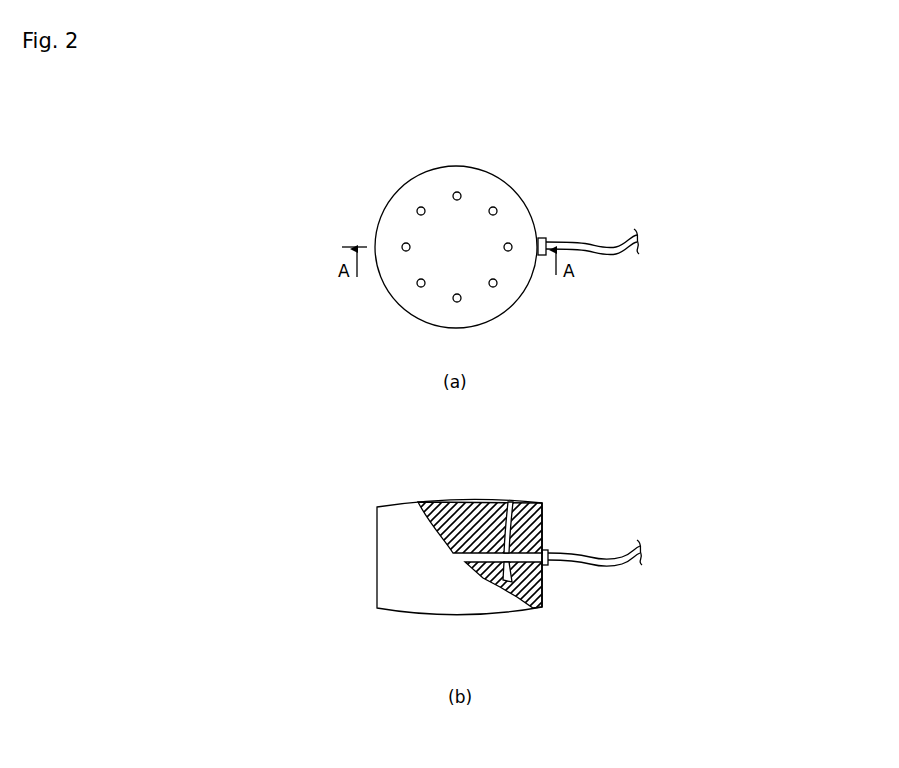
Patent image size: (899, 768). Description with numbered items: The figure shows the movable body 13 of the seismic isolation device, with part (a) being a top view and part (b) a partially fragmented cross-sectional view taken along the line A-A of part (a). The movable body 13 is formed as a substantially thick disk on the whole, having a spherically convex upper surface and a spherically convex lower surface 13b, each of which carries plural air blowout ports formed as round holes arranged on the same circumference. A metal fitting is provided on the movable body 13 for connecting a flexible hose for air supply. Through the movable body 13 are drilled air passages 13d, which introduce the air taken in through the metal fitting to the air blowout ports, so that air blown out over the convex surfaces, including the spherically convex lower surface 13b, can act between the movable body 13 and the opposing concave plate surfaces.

The movable body 13 is at (312, 306).
The spherically convex lower surface 13b is at (533, 607).
The air passages 13d is at (500, 576).